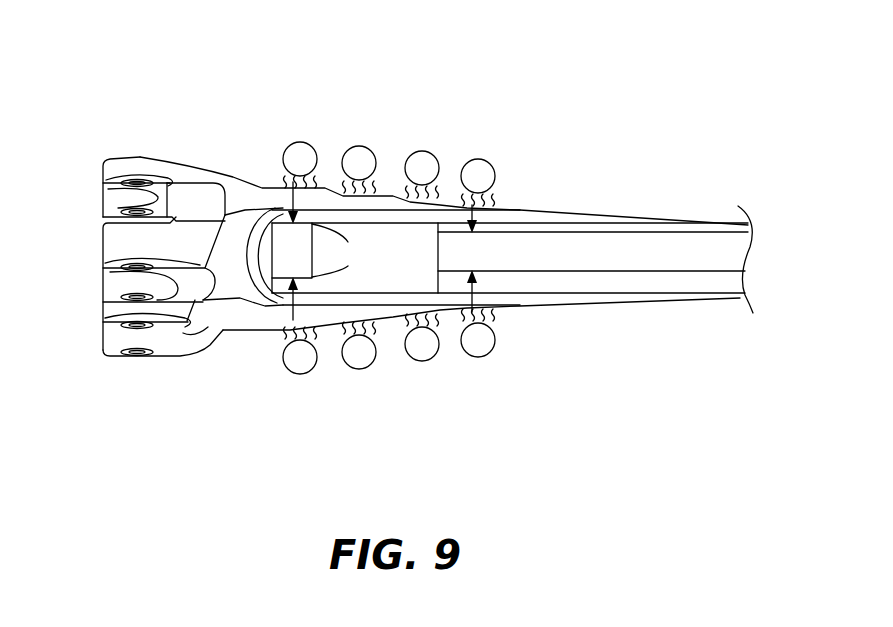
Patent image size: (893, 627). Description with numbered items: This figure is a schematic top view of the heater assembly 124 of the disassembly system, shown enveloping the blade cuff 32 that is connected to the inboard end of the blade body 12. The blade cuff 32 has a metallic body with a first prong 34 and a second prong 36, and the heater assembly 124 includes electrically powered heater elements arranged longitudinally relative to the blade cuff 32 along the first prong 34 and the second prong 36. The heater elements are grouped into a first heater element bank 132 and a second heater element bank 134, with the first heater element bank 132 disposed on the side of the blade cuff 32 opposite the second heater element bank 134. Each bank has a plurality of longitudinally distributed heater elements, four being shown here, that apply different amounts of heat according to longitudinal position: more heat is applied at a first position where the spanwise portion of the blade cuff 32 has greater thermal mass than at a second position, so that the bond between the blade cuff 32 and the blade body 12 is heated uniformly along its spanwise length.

The blade body 12 is at (707, 256).
The blade cuff 32 is at (120, 243).
The first prong 34 is at (263, 188).
The second prong 36 is at (270, 325).
The heater assembly 124 is at (200, 467).
The first heater element bank 132 is at (306, 373).
The second heater element bank 134 is at (308, 144).